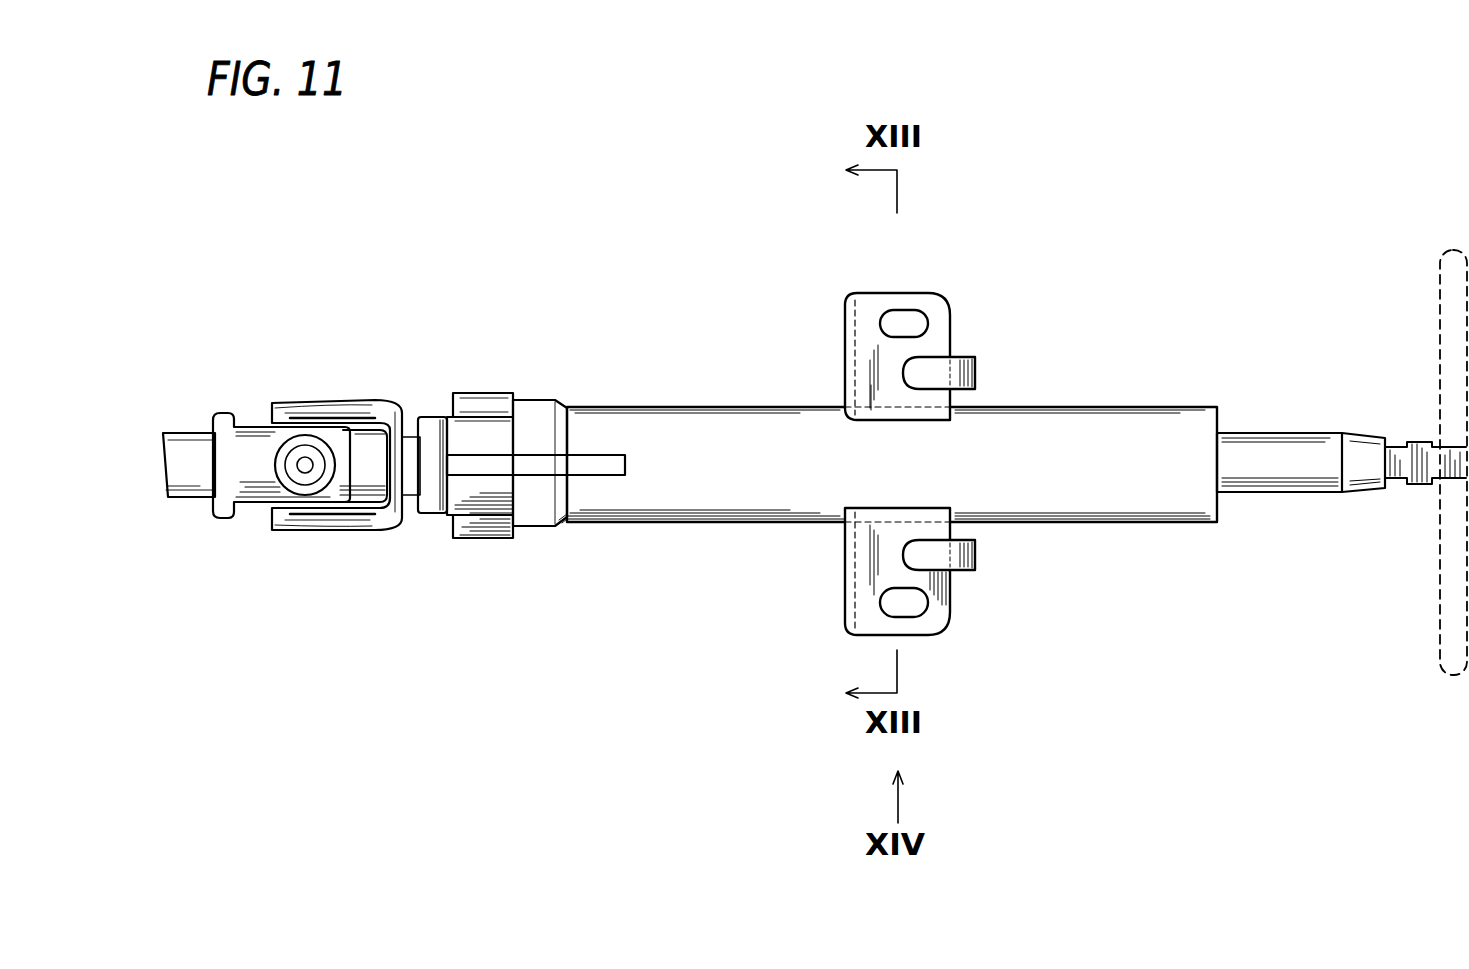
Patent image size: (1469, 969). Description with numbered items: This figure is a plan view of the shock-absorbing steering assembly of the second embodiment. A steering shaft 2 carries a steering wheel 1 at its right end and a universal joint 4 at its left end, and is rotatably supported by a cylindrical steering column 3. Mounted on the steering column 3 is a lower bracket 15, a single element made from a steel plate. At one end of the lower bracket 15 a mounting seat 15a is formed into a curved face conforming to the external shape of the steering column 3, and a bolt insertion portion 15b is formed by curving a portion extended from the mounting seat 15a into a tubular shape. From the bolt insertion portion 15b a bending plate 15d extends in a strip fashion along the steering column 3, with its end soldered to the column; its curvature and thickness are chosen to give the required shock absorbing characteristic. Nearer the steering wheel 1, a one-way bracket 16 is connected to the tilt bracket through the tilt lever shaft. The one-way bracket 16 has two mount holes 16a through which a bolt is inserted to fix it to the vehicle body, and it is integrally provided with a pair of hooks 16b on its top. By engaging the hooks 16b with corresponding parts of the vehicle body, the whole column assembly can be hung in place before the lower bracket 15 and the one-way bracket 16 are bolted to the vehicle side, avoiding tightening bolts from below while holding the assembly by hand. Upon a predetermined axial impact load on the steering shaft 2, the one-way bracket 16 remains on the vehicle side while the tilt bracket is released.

The steering wheel 1 is at (1438, 290).
The steering shaft 2 is at (1270, 434).
The steering column 3 is at (1125, 405).
The universal joint 4 is at (340, 530).
The lower bracket 15 is at (492, 413).
The mounting seat 15a is at (453, 502).
The bolt insertion portion 15b is at (433, 430).
The bending plate 15d is at (537, 462).
The one-way bracket 16 is at (933, 293).
The mount holes 16a is at (907, 322).
The hooks 16b is at (977, 373).